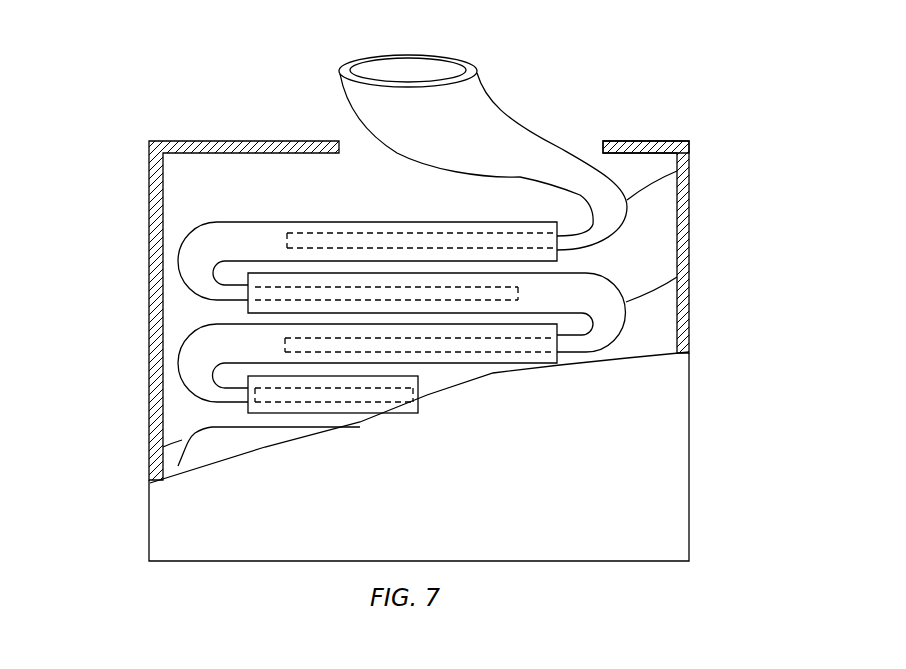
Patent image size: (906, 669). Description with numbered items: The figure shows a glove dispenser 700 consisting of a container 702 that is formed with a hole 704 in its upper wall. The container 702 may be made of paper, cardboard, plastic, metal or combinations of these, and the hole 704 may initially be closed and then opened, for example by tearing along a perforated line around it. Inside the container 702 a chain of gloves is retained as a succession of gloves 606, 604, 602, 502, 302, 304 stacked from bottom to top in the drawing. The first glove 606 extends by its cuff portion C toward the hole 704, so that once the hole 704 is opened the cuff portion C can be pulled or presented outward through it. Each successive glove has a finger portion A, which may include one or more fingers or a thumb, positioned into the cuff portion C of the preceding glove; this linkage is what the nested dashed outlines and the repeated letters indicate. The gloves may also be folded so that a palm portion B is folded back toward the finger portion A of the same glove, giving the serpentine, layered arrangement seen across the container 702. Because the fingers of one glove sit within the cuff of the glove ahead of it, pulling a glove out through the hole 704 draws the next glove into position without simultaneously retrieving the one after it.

The glove dispenser 700 is at (675, 50).
The container 702 is at (692, 200).
The hole 704 is at (603, 140).
The glove 302 is at (370, 425).
The glove 304 is at (150, 483).
The glove 502 is at (180, 360).
The glove 602 is at (691, 266).
The glove 604 is at (180, 247).
The first glove 606 is at (691, 165).
The finger portion A is at (328, 337).
The palm portion B is at (606, 173).
The cuff portion C is at (478, 68).